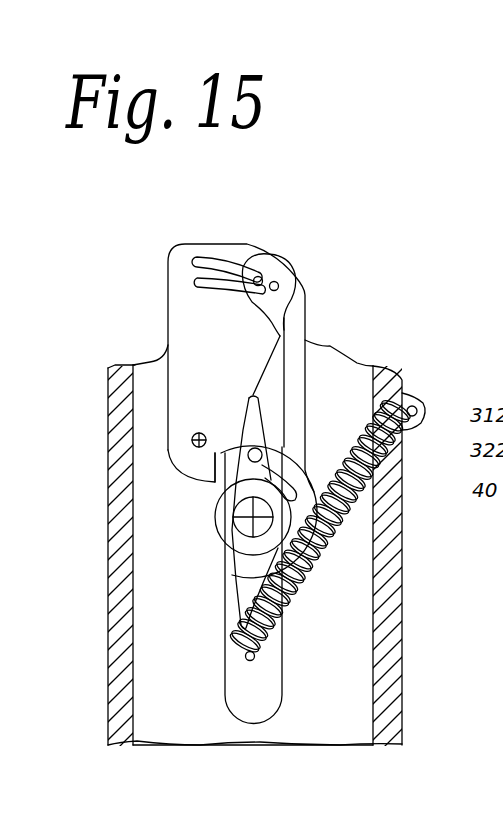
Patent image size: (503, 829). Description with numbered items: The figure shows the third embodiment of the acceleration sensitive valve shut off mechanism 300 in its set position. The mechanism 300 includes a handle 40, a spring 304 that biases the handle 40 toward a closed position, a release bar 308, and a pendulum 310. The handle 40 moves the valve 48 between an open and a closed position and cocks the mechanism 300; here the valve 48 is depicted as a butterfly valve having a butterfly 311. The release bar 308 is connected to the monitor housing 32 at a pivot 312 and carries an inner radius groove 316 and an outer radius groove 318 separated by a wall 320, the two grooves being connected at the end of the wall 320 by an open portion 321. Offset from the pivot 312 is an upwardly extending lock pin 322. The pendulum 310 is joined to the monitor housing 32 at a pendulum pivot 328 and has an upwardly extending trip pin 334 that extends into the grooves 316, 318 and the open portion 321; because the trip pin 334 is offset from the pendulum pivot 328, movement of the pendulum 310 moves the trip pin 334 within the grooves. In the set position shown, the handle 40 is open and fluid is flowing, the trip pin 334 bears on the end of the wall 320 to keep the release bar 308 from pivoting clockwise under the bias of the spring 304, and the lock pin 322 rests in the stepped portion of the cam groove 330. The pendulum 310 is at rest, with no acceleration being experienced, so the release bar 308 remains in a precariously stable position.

The acceleration sensitive valve shut off mechanism 300 is at (317, 241).
The release bar 308 is at (175, 343).
The outer radius groove 318 is at (197, 261).
The inner radius groove 316 is at (197, 283).
The wall 320 is at (240, 286).
The pendulum pivot 328 is at (280, 286).
The open portion 321 is at (272, 282).
The trip pin 334 is at (278, 291).
The pendulum 310 is at (300, 338).
The monitor housing 32 is at (402, 693).
The pivot 312 is at (192, 438).
The lock pin 322 is at (240, 461).
The handle 40 is at (222, 489).
The butterfly 311 is at (270, 432).
The cam groove 330 is at (283, 460).
The spring 304 is at (300, 540).
The valve 48 is at (194, 664).